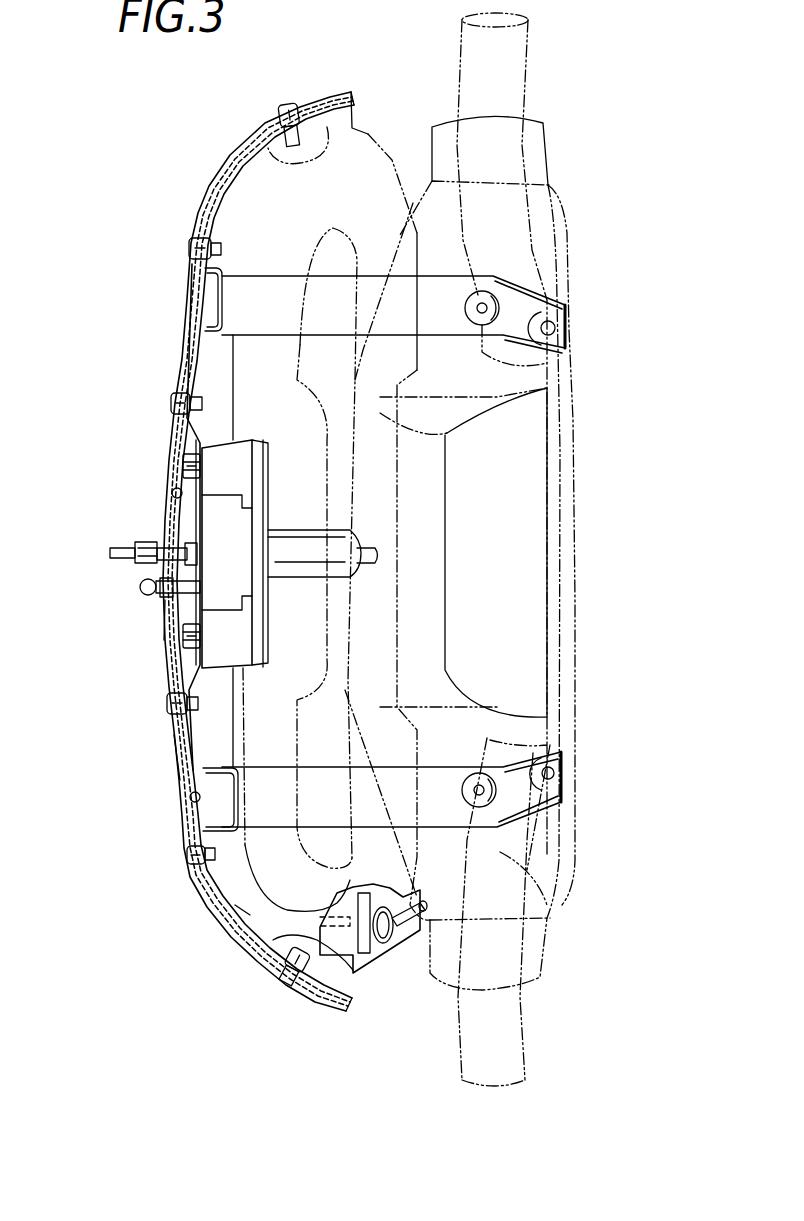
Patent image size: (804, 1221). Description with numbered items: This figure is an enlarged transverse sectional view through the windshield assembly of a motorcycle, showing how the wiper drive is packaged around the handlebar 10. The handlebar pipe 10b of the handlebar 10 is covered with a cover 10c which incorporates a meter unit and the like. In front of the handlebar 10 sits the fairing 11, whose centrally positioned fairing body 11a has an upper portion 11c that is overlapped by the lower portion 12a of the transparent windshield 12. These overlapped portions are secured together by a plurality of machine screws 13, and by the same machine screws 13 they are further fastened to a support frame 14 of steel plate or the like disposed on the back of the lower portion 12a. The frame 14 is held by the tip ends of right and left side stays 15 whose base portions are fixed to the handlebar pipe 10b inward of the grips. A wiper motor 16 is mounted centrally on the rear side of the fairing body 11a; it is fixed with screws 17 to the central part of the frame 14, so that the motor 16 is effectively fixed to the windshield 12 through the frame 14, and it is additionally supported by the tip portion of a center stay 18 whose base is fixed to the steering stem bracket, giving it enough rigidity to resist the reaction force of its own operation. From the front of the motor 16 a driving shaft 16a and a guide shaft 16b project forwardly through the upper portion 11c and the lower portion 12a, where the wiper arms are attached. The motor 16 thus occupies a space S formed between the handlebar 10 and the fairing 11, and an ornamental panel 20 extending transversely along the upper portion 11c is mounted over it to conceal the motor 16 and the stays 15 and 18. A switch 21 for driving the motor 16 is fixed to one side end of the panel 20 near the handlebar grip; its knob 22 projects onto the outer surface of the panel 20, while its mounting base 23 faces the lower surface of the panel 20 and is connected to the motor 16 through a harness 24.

The handlebar 10 is at (522, 1002).
The handlebar pipe 10b is at (520, 873).
The cover 10c is at (578, 630).
The fairing 11 is at (172, 734).
The fairing body 11a is at (172, 622).
The upper portion of the fairing body 11c is at (172, 755).
The windshield 12 is at (176, 490).
The lower portion of the windshield 12a is at (189, 807).
The machine screws 13 is at (175, 400).
The support frame 14 is at (200, 733).
The side stays 15 is at (277, 337).
The wiper motor 16 is at (245, 535).
The driving shaft 16a is at (125, 546).
The guide shaft 16b is at (145, 586).
The screws 17 is at (182, 463).
The center stay 18 is at (313, 562).
The ornamental panel 20 is at (420, 852).
The switch 21 is at (407, 932).
The knob 22 is at (428, 915).
The mounting base 23 is at (366, 957).
The harness 24 is at (262, 918).
The space S is at (243, 888).